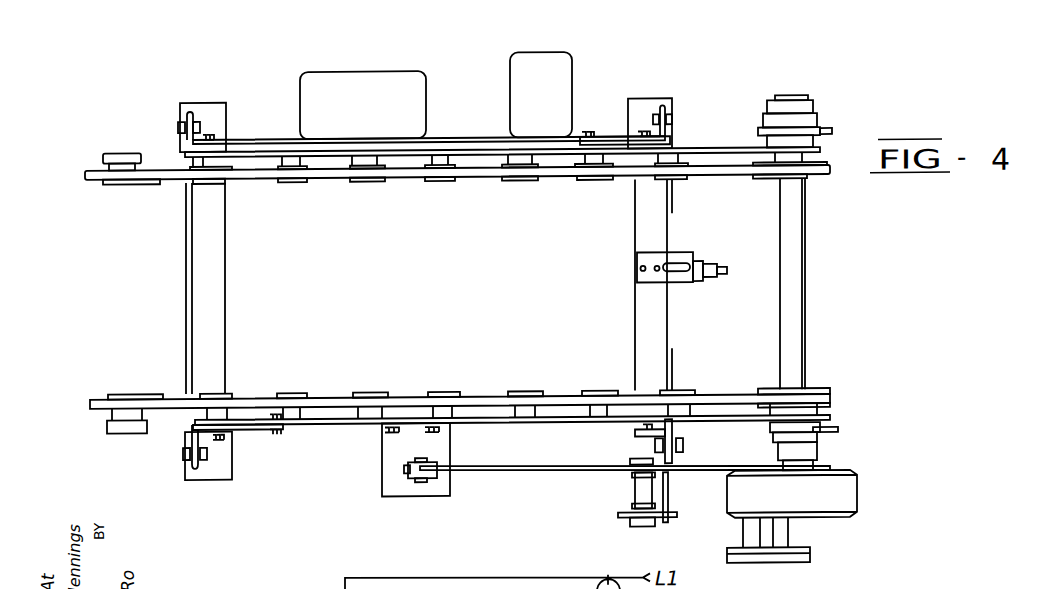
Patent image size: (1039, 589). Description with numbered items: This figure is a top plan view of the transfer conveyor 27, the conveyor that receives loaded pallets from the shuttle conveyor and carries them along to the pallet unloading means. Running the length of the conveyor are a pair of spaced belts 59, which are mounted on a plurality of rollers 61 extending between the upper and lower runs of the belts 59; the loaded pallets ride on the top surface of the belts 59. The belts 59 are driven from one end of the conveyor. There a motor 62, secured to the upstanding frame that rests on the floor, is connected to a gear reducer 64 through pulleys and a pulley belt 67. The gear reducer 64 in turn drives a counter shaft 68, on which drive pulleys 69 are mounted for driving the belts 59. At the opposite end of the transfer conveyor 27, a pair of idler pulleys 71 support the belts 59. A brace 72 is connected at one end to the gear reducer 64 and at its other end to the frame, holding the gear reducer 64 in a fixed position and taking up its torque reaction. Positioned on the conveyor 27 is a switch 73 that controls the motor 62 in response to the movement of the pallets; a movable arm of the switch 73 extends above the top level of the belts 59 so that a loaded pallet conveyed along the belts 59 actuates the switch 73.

The transfer conveyor 27 is at (163, 194).
The spaced belts 59 is at (333, 182).
The rollers 61 is at (288, 183).
The motor 62 is at (826, 465).
The gear reducer 64 is at (858, 506).
The pulley belt 67 is at (812, 562).
The counter shaft 68 is at (806, 346).
The drive pulleys 69 is at (818, 181).
The idler pulleys 71 is at (97, 167).
The brace 72 is at (550, 474).
The switch 73 is at (708, 265).